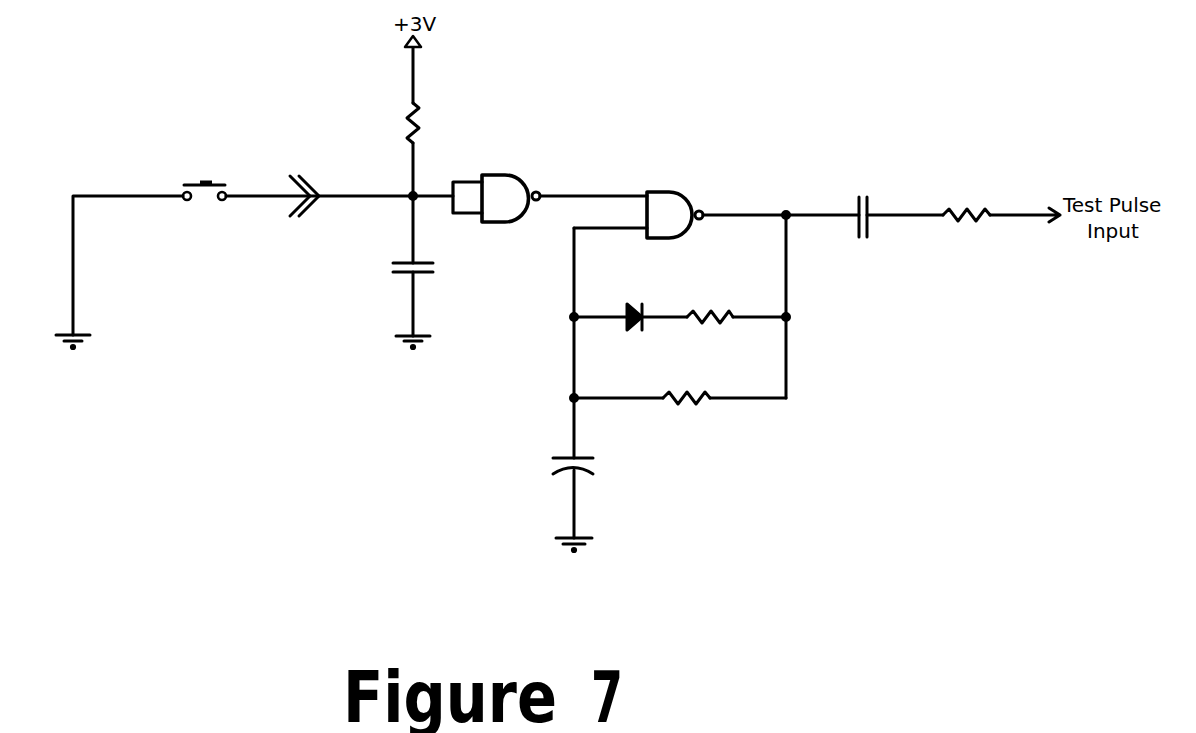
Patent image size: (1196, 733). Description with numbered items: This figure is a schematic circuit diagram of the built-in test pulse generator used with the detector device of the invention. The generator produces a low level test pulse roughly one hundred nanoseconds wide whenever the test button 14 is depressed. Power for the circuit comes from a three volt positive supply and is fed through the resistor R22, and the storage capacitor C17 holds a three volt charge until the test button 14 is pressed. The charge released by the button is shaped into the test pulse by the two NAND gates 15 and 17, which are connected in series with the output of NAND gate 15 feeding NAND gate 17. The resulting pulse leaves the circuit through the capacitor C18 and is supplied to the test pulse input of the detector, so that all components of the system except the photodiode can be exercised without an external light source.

The test button 14 is at (192, 184).
The resistor R22 is at (407, 118).
The storage capacitor C17 is at (403, 272).
The NAND gate 15 is at (507, 175).
The NAND gate 17 is at (670, 192).
The capacitor C18 is at (858, 200).